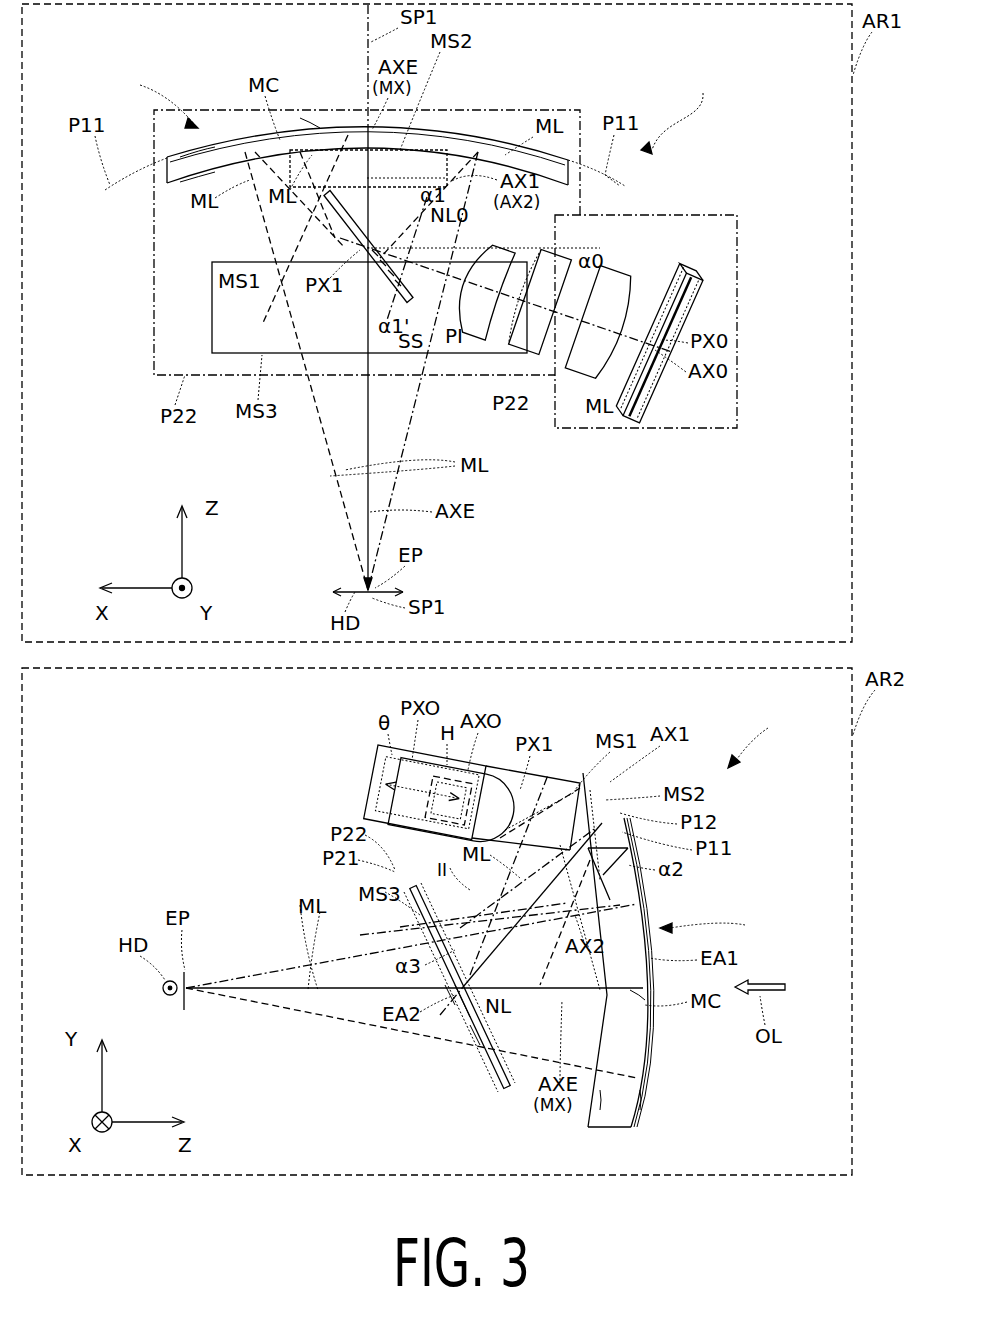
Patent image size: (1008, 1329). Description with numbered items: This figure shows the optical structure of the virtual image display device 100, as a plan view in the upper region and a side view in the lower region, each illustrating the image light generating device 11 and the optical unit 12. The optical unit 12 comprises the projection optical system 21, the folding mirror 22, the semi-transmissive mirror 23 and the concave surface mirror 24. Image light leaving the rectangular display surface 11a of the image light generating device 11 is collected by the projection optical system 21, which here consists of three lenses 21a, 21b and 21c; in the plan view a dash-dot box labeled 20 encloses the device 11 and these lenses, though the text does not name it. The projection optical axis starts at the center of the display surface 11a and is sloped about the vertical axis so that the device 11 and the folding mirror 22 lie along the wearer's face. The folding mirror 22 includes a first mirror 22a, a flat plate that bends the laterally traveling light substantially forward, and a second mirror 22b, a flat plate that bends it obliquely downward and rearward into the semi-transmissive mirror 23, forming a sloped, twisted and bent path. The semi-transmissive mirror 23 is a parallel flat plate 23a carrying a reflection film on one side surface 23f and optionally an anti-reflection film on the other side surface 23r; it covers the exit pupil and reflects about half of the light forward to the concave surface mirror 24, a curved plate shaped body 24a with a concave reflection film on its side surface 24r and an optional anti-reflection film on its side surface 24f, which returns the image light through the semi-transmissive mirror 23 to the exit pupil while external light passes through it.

The virtual image display device 100 is at (713, 416).
The image light generating device 11 is at (502, 529).
The display surface 11a is at (645, 415).
The optical unit 12 is at (449, 497).
The projection optical system unit 20 is at (556, 415).
The projection optical system 21 is at (523, 533).
The lens 21a is at (605, 280).
The lens 21b is at (548, 270).
The lens 21c is at (495, 262).
The folding mirror 22 is at (418, 593).
The first mirror 22a is at (372, 268).
The second mirror 22b is at (340, 160).
The semi-transmissive mirror 23 is at (449, 751).
The parallel flat plate 23a is at (470, 1020).
The one side surface 23f is at (485, 1045).
The other side surface 23r is at (452, 1005).
The concave surface mirror 24 is at (418, 606).
The plate shaped body 24a is at (238, 140).
The other side surface 24f is at (195, 152).
The one side surface 24r is at (195, 180).